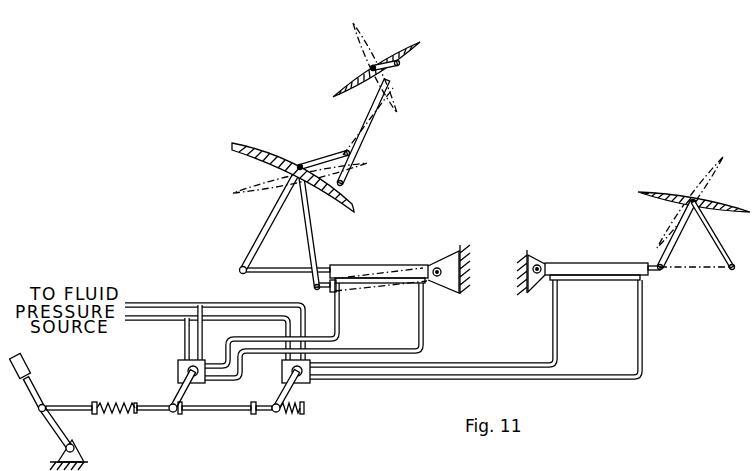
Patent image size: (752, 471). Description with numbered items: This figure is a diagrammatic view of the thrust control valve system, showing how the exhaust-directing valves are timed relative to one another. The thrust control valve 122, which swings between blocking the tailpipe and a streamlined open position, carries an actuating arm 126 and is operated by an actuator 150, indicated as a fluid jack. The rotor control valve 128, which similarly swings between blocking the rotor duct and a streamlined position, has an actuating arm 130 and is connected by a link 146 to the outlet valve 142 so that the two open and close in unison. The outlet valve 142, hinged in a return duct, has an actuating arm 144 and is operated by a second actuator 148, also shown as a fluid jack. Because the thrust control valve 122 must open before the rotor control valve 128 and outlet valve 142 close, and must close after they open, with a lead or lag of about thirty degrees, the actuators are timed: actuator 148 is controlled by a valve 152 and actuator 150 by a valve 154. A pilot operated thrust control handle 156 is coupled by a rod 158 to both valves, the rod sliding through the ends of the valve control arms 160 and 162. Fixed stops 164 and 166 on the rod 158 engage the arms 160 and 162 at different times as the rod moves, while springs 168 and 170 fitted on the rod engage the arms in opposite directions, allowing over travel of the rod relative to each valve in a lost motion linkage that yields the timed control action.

The thrust control valve 122 is at (690, 198).
The actuating arm 126 is at (673, 238).
The rotor control valve 128 is at (365, 80).
The actuating arm 130 is at (380, 84).
The outlet valve 142 is at (275, 146).
The actuating arm 144 is at (262, 228).
The link 146 is at (367, 143).
The actuator 148 is at (366, 266).
The actuator 150 is at (603, 266).
The valve 152 is at (180, 363).
The valve 154 is at (312, 382).
The thrust control handle 156 is at (30, 387).
The rod 158 is at (65, 406).
The valve control arm 160 is at (182, 390).
The valve control arm 162 is at (285, 390).
The fixed stop 164 is at (180, 414).
The fixed stop 166 is at (253, 414).
The spring 168 is at (115, 413).
The spring 170 is at (290, 414).